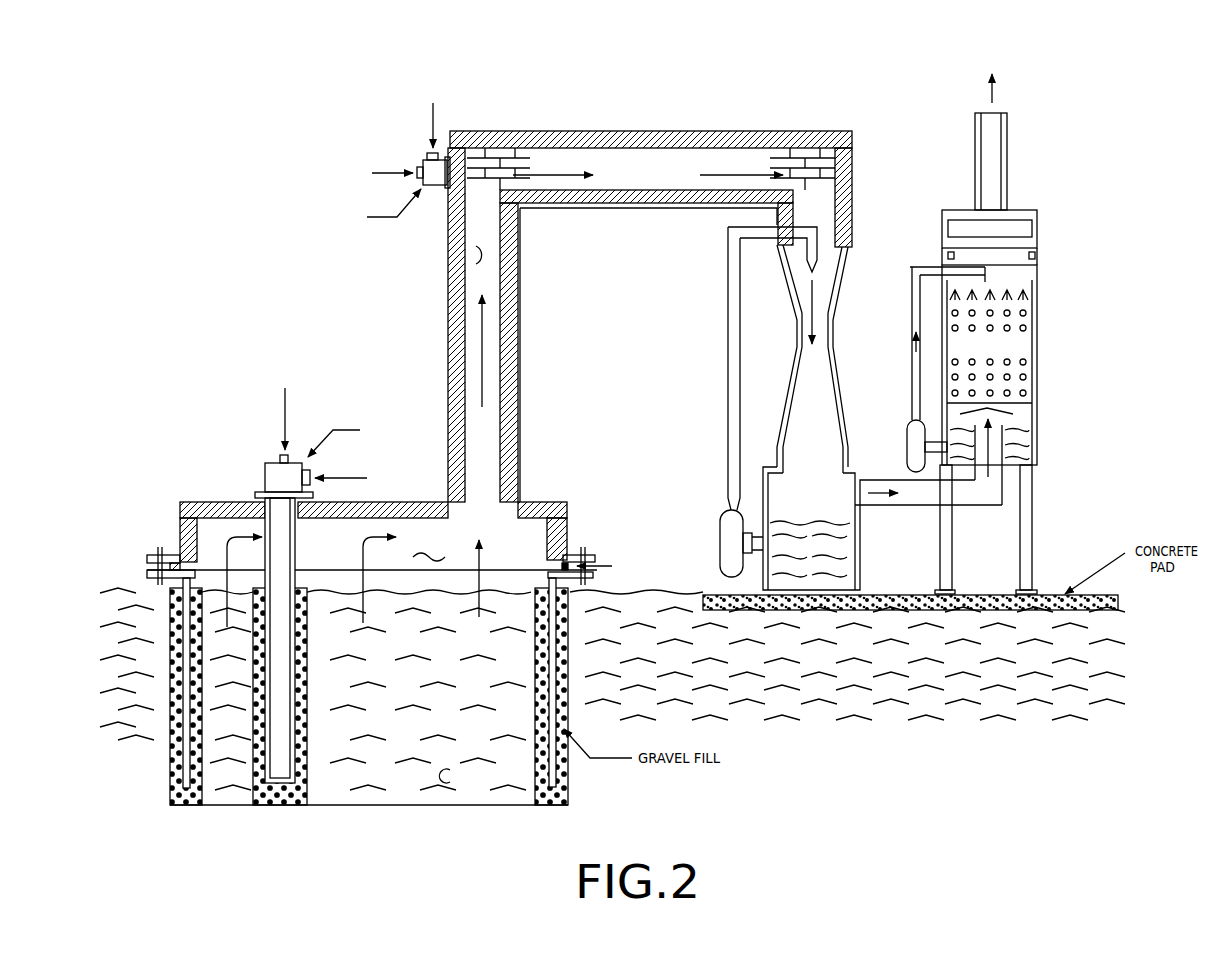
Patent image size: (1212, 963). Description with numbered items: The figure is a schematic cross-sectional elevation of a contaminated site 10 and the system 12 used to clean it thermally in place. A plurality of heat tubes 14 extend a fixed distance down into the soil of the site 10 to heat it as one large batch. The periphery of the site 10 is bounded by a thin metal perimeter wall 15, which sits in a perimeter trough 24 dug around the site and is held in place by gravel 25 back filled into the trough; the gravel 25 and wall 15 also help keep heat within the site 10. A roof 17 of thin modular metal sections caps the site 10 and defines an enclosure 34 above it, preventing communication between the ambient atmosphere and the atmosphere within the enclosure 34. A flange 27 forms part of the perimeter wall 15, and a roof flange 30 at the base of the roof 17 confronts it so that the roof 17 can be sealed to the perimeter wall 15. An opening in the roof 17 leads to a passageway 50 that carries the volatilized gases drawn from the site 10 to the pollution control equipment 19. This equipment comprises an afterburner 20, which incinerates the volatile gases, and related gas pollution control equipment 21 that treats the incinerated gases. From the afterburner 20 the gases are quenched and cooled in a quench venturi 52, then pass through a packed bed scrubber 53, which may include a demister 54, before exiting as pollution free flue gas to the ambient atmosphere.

The contaminated site 10 is at (437, 788).
The system 12 is at (362, 312).
The heat tubes 14 is at (267, 531).
The perimeter wall 15 is at (561, 774).
The roof 17 is at (546, 494).
The pollution control equipment 19 is at (653, 97).
The afterburner 20 is at (743, 129).
The gas pollution control equipment 21 is at (1040, 310).
The perimeter trough 24 is at (176, 773).
The gravel 25 is at (186, 798).
The flange 27 is at (144, 566).
The roof flange 30 is at (603, 547).
The enclosure 34 is at (429, 544).
The passageway 50 is at (491, 254).
The quench venturi 52 is at (836, 327).
The packed bed scrubber 53 is at (1024, 380).
The demister 54 is at (1040, 225).